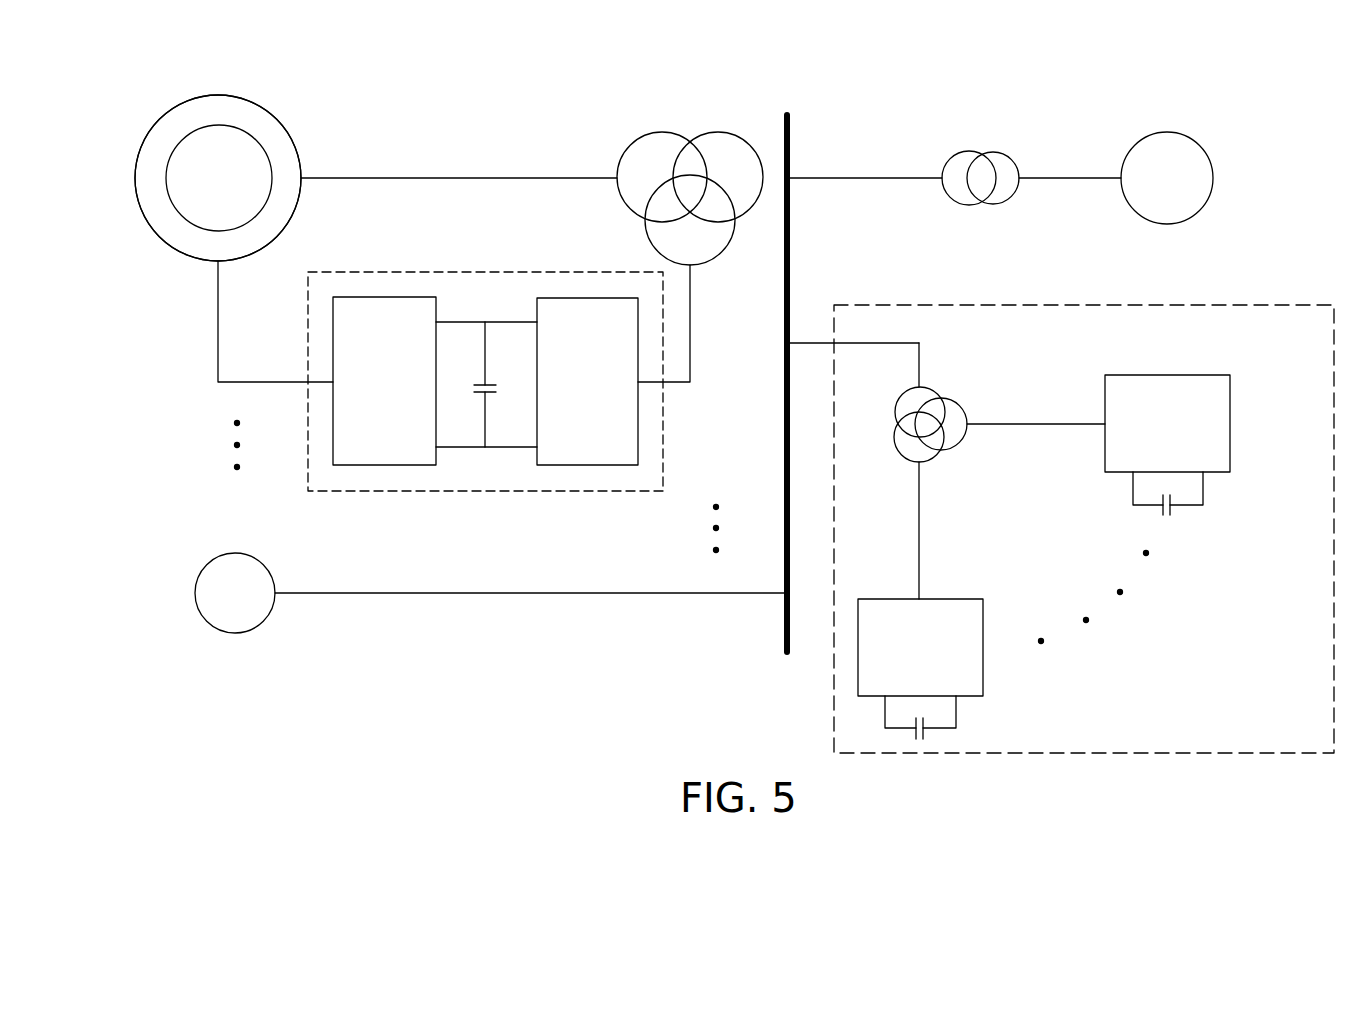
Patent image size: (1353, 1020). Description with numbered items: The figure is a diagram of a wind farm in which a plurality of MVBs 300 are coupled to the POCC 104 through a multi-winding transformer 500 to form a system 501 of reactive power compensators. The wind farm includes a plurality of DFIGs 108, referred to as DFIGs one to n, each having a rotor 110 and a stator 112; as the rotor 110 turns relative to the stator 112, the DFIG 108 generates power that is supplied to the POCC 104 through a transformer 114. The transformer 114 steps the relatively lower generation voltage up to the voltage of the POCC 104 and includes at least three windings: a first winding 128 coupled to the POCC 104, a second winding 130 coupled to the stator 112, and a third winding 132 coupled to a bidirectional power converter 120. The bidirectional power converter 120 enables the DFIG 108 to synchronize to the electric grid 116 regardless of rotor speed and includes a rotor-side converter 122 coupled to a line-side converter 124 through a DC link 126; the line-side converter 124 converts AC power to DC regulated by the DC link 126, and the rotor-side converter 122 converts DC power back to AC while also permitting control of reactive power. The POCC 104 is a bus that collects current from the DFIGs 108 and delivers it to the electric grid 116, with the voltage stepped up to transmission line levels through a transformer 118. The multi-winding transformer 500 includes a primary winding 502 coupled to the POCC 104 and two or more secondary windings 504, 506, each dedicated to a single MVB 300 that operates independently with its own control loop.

The POCC 104 is at (784, 628).
The DFIG 108 is at (185, 283).
The rotor 110 is at (272, 152).
The stator 112 is at (297, 210).
The transformer 114 is at (629, 167).
The electric grid 116 is at (1168, 226).
The transformer 118 is at (981, 153).
The bidirectional power converter 120 is at (470, 403).
The rotor-side converter 122 is at (385, 466).
The line-side converter 124 is at (639, 443).
The DC link 126 is at (500, 415).
The first winding 128 is at (717, 132).
The second winding 130 is at (640, 133).
The third winding 132 is at (648, 220).
The MVB 300 is at (1231, 423).
The multi-winding transformer 500 is at (960, 413).
The system 501 is at (1220, 754).
The primary winding 502 is at (930, 390).
The secondary winding 504 is at (898, 445).
The secondary winding 506 is at (985, 408).